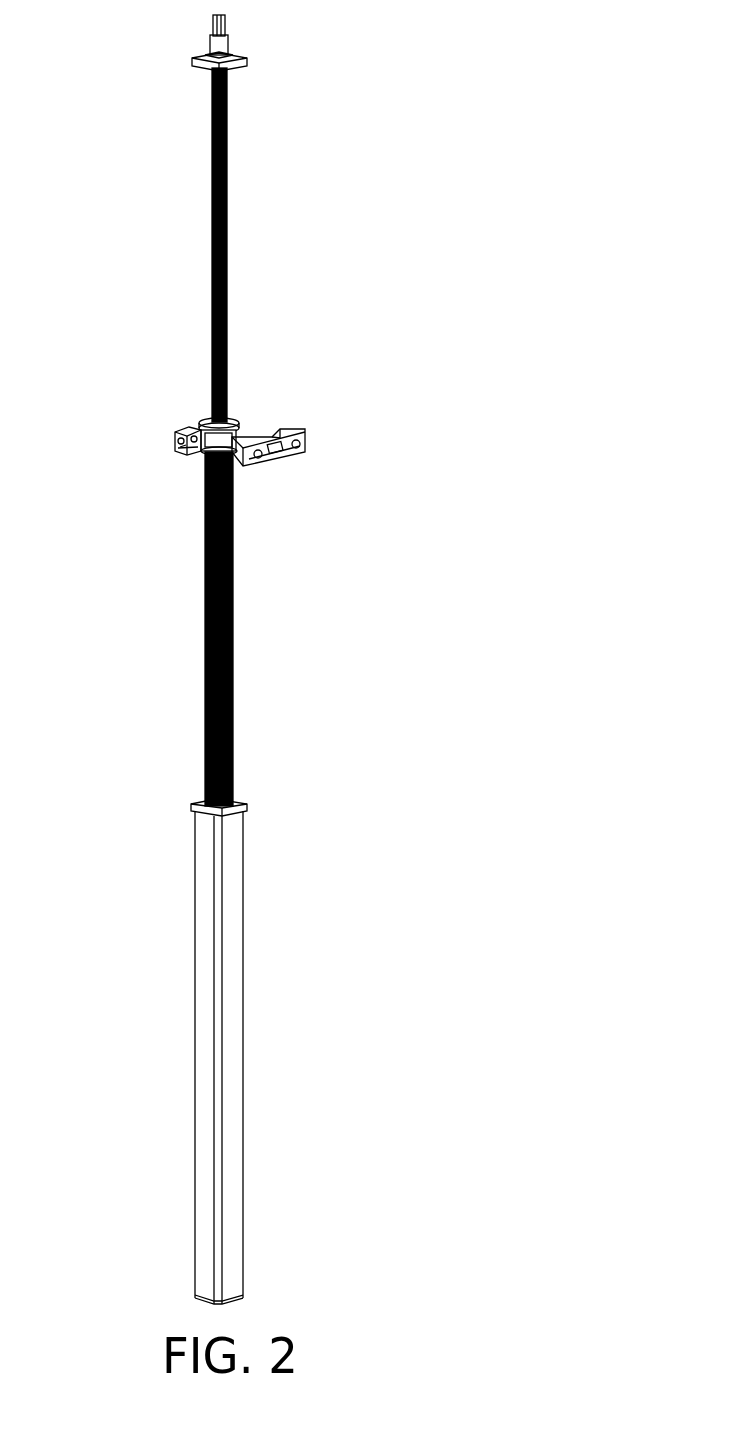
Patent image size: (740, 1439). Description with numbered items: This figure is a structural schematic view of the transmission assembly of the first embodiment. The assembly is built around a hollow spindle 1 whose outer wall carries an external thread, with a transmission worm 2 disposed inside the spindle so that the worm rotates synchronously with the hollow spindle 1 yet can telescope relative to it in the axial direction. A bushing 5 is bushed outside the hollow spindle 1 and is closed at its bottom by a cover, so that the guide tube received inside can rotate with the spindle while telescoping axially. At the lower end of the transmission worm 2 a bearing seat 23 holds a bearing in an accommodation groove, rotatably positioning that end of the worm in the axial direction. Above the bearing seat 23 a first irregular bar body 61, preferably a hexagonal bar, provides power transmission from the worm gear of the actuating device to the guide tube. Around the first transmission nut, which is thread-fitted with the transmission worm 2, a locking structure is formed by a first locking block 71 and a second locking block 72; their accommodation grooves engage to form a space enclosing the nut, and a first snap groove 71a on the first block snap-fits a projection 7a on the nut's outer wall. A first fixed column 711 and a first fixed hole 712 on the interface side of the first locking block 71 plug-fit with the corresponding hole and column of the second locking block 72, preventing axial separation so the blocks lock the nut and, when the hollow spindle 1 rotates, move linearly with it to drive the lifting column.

The hollow spindle 1 is at (233, 605).
The transmission worm 2 is at (227, 262).
The bushing 5 is at (193, 993).
The projection 7a is at (263, 407).
The bearing seat 23 is at (247, 62).
The first irregular bar body 61 is at (238, 35).
The first locking block 71 is at (192, 424).
The first snap groove 71a is at (184, 448).
The second locking block 72 is at (304, 452).
The first fixed column 711 is at (194, 418).
The first fixed hole 712 is at (234, 418).